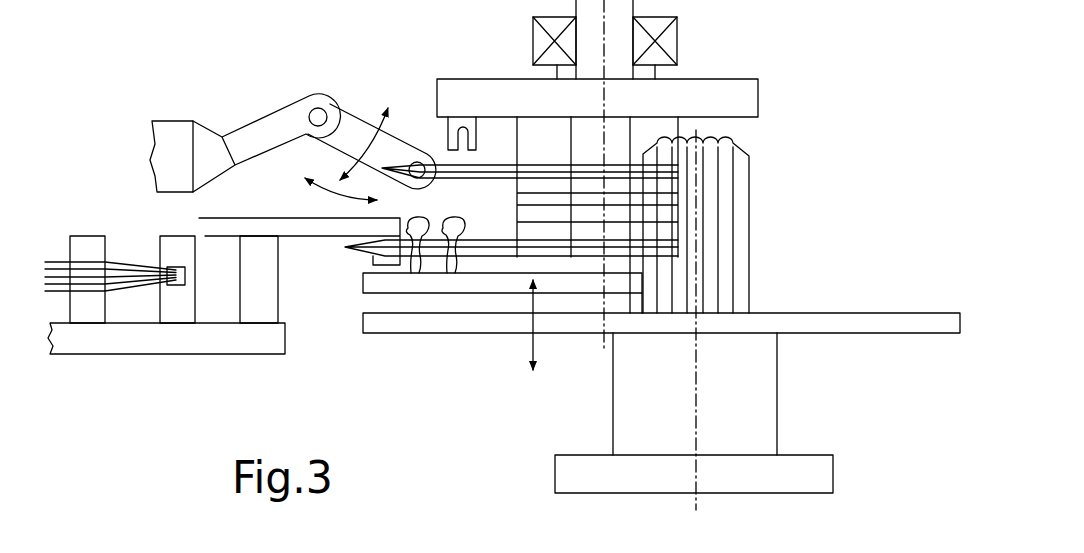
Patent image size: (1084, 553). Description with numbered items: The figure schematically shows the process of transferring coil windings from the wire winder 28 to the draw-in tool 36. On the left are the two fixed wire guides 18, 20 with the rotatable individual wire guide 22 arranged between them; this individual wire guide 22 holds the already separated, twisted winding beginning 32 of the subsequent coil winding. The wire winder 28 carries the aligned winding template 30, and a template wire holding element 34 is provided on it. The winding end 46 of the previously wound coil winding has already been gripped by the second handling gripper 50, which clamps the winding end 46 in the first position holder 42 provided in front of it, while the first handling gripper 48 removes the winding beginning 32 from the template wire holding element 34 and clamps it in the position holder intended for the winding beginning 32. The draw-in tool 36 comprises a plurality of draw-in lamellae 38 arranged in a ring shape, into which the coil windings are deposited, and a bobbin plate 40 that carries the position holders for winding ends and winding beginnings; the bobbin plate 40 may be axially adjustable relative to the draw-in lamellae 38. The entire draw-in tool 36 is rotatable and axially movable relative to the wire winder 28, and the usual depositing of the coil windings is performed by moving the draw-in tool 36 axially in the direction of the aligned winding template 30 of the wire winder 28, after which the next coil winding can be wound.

The fixed wire guide 18 is at (88, 315).
The fixed wire guide 20 is at (256, 310).
The rotatable individual wire guide 22 is at (173, 310).
The wire winder 28 is at (728, 76).
The winding template 30 is at (663, 127).
The winding beginning 32 is at (398, 165).
The template wire holding element 34 is at (452, 122).
The draw-in tool 36 is at (753, 270).
The draw-in lamellae 38 is at (738, 222).
The bobbin plate 40 is at (878, 323).
The first position holder 42 is at (423, 265).
The winding end 46 is at (358, 252).
The first handling gripper 48 is at (276, 133).
The second handling gripper 50 is at (310, 237).